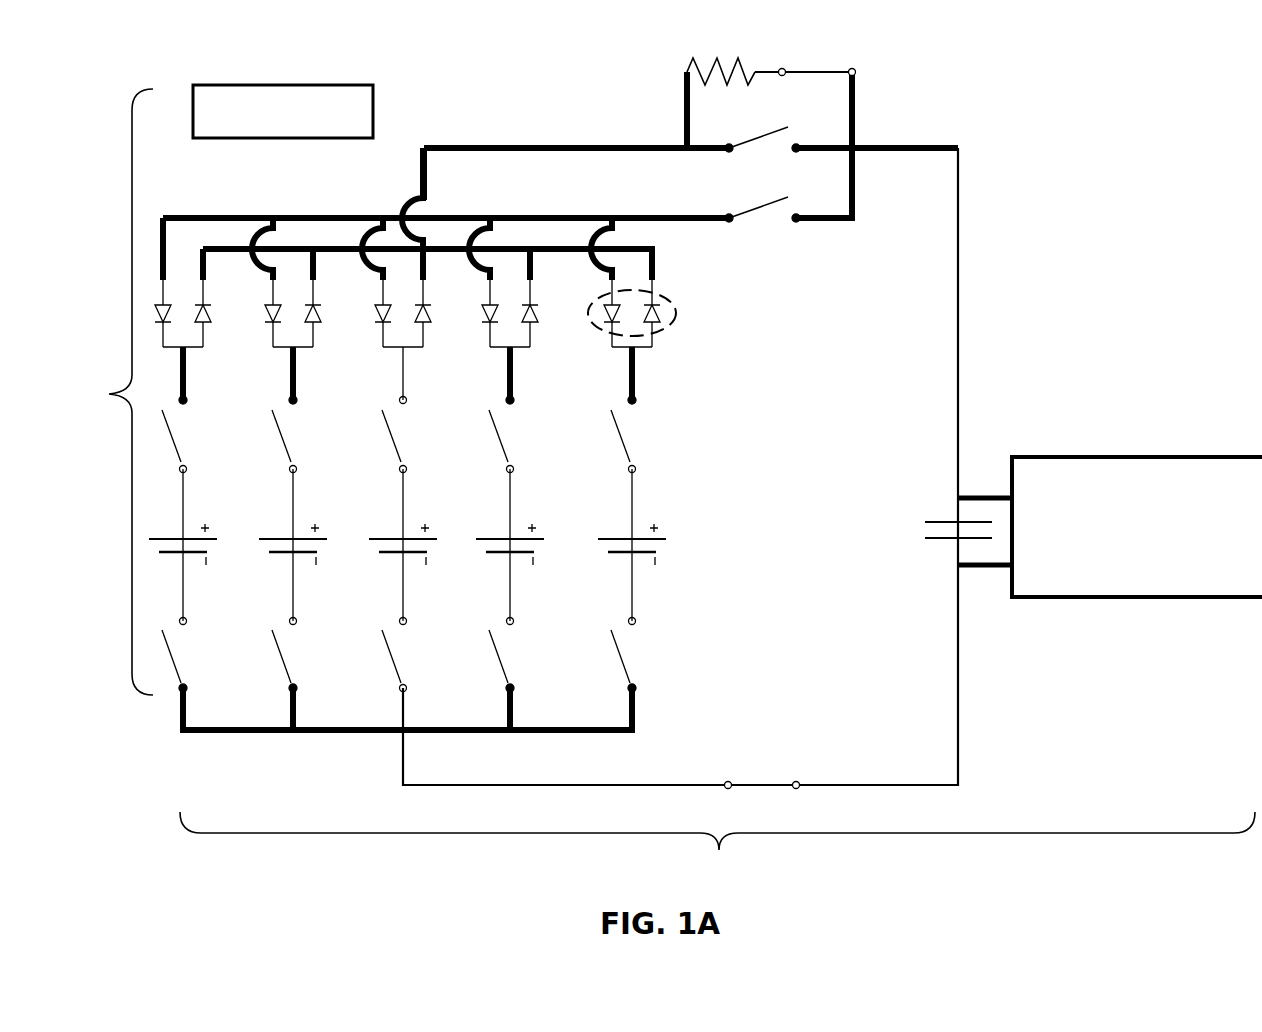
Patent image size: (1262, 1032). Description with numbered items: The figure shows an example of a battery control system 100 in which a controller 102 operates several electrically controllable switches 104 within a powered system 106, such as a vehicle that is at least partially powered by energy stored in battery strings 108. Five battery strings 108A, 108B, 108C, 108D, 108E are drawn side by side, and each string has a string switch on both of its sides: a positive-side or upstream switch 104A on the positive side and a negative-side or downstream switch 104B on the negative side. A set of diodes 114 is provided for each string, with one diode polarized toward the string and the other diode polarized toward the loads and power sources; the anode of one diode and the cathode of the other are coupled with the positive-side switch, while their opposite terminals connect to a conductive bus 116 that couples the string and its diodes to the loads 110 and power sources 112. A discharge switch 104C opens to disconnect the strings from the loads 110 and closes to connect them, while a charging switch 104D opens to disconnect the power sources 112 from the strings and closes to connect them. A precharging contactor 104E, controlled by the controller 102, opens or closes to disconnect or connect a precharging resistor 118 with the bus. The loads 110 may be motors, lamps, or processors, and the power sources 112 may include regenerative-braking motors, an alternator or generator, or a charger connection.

The battery control system 100 is at (101, 392).
The controller 102 is at (273, 85).
The electrically controllable switches 104 is at (652, 429).
The positive-side switch 104A is at (172, 436).
The negative-side switch 104B is at (172, 654).
The discharge switch 104C is at (758, 137).
The charging switch 104D is at (745, 213).
The precharging contactor 104E is at (803, 84).
The powered system 106 is at (717, 520).
The battery strings 108 is at (457, 548).
The battery string 108A is at (192, 552).
The battery string 108B is at (302, 552).
The battery string 108C is at (412, 552).
The battery string 108D is at (519, 552).
The battery string 108E is at (641, 552).
The loads 110 is at (1093, 491).
The power sources 112 is at (1140, 457).
The set of diodes 114 is at (676, 313).
The conductive bus 116 is at (424, 163).
The precharging resistor 118 is at (718, 58).